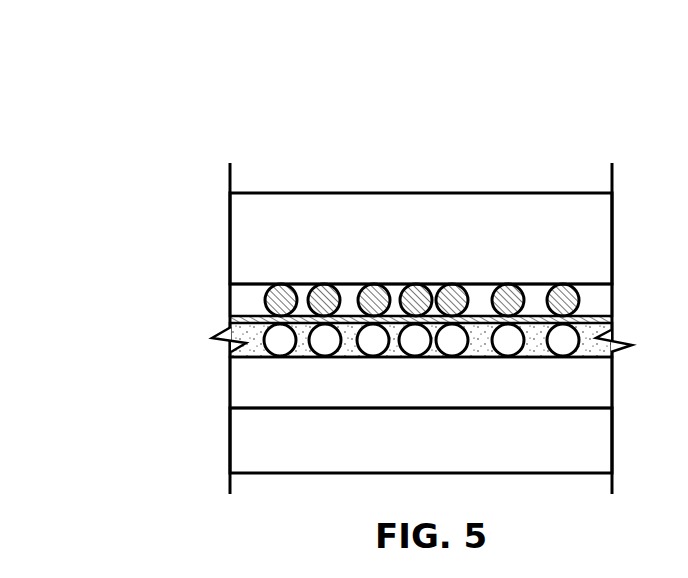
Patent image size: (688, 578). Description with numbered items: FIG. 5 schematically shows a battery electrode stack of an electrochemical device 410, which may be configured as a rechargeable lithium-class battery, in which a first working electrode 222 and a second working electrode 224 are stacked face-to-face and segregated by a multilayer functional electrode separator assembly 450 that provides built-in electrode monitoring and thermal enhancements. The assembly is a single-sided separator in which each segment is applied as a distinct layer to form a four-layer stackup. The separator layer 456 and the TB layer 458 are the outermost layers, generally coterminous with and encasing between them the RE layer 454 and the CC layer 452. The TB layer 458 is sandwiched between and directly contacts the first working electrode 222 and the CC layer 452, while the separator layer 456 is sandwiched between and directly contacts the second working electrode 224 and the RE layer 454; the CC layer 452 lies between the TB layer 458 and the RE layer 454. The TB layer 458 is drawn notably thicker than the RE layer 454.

The electrochemical device 410 is at (203, 72).
The first working electrode 222 is at (230, 213).
The second working electrode 224 is at (230, 443).
The electrode separator assembly 450 is at (174, 273).
The CC layer 452 is at (232, 321).
The RE layer 454 is at (240, 344).
The separator layer 456 is at (230, 380).
The TB layer 458 is at (240, 302).